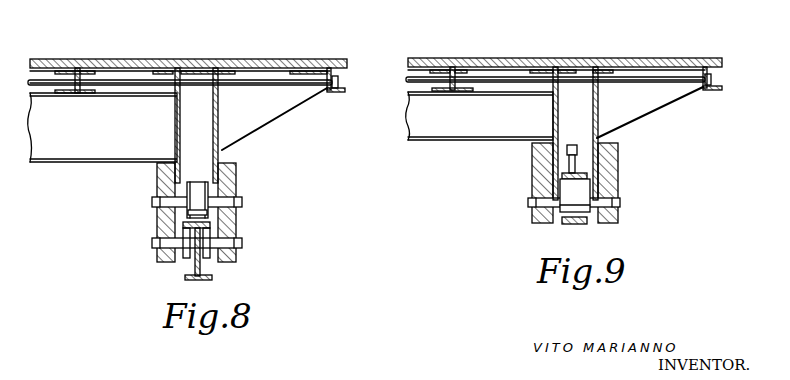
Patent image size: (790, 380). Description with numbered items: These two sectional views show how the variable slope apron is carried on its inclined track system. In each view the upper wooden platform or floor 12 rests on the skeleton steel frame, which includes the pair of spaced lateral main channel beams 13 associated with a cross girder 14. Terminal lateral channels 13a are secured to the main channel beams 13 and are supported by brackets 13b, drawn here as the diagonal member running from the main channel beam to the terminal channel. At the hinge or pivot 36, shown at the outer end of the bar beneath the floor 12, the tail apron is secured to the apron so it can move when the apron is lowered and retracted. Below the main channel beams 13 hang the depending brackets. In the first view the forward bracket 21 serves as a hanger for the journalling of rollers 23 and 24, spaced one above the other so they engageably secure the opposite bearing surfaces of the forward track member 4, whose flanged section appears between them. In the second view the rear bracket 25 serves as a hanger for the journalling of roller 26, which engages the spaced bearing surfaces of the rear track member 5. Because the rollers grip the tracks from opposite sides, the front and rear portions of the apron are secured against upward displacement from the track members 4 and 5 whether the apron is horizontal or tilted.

In FIG. 8, the wooden platform or floor 12 is at (272, 59).
In FIG. 9, the wooden platform or floor 12 is at (659, 58).
In FIG. 8, the hinge or pivot 36 is at (410, 78).
In FIG. 9, the hinge or pivot 36 is at (558, 79).
In FIG. 8, the cross girder 14 is at (85, 150).
In FIG. 9, the cross girder 14 is at (450, 130).
In FIG. 8, the main channel beam 13 is at (181, 110).
In FIG. 9, the main channel beam 13 is at (593, 110).
In FIG. 8, the terminal lateral channel 13a is at (344, 93).
In FIG. 9, the terminal lateral channel 13a is at (724, 91).
In FIG. 8, the bracket 13b is at (288, 107).
In FIG. 9, the bracket 13b is at (678, 92).
In FIG. 8, the forward bracket 21 is at (237, 180).
In FIG. 8, the roller 23 is at (198, 181).
In FIG. 8, the roller 24 is at (186, 258).
In FIG. 8, the forward track member 4 is at (204, 268).
In FIG. 9, the rear track member 5 is at (578, 152).
In FIG. 9, the rear bracket 25 is at (612, 161).
In FIG. 9, the roller 26 is at (573, 202).